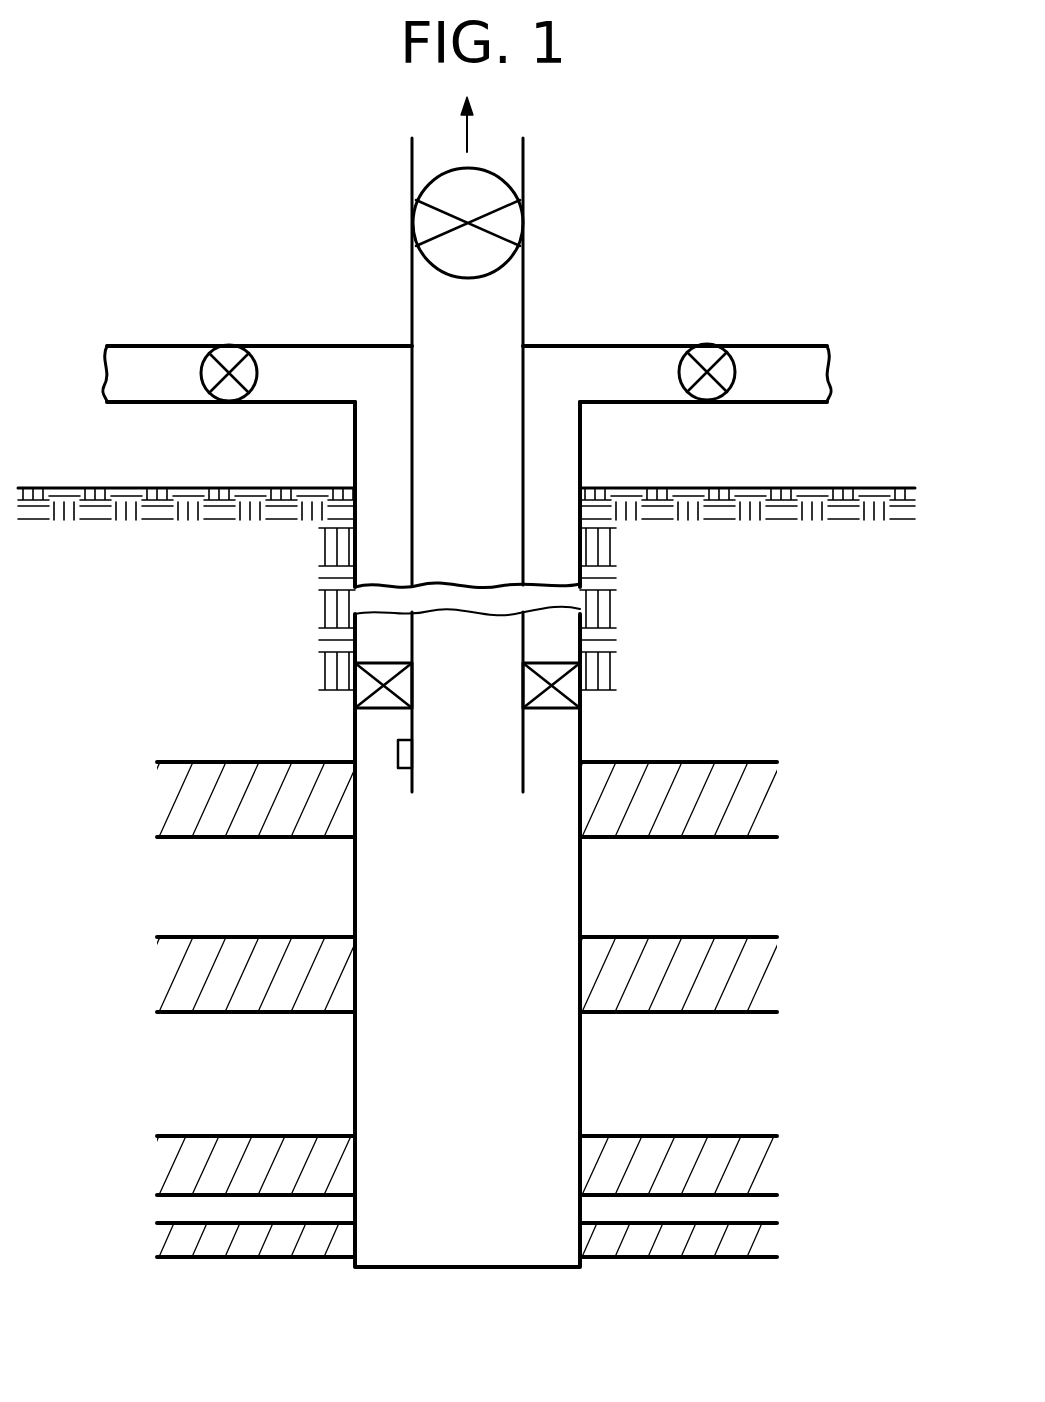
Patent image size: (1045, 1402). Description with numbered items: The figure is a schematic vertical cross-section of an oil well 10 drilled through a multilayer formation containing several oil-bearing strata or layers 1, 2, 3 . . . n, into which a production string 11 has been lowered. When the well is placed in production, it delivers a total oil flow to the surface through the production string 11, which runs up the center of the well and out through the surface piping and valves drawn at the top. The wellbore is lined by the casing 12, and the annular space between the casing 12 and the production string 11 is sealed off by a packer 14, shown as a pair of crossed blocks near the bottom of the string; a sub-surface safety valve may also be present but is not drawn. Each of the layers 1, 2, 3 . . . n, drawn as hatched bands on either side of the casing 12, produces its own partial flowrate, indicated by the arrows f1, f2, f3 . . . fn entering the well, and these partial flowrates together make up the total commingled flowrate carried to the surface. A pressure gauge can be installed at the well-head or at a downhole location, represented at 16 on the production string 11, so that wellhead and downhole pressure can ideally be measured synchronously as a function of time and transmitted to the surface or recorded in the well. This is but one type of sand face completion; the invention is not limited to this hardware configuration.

The oil well 10 is at (567, 545).
The production string 11 is at (412, 455).
The casing 12 is at (578, 908).
The packer 14 is at (572, 693).
The downhole pressure gauge location 16 is at (398, 751).
The first oil-bearing layer 1 is at (155, 762).
The second oil-bearing layer 2 is at (155, 937).
The third oil-bearing layer 3 is at (155, 1136).
The nth oil-bearing layer n is at (155, 1223).
The partial flowrate of layer 1 f1 is at (355, 822).
The partial flowrate of layer 2 f2 is at (355, 985).
The partial flowrate of layer 3 f3 is at (355, 1165).
The partial flowrate of layer n fn is at (355, 1237).